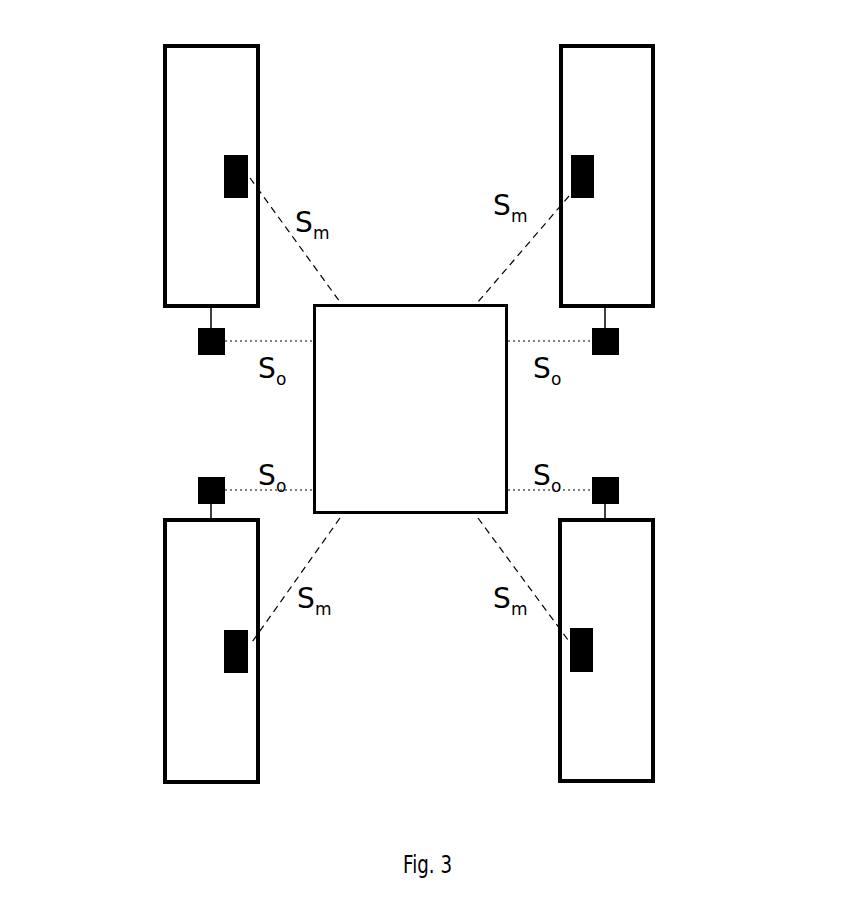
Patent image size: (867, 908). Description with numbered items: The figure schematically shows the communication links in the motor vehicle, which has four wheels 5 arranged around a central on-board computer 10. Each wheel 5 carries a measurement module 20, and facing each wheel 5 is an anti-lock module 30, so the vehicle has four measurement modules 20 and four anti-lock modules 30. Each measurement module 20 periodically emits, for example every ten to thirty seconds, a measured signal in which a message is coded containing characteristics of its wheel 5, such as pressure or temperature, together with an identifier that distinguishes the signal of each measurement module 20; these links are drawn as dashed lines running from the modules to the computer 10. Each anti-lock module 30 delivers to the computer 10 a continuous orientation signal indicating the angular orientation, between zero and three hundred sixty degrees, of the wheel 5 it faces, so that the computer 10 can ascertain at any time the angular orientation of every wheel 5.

The wheel 5 is at (163, 48).
The on-board computer 10 is at (432, 485).
The measurement module 20 is at (224, 170).
The anti-lock module 30 is at (198, 340).